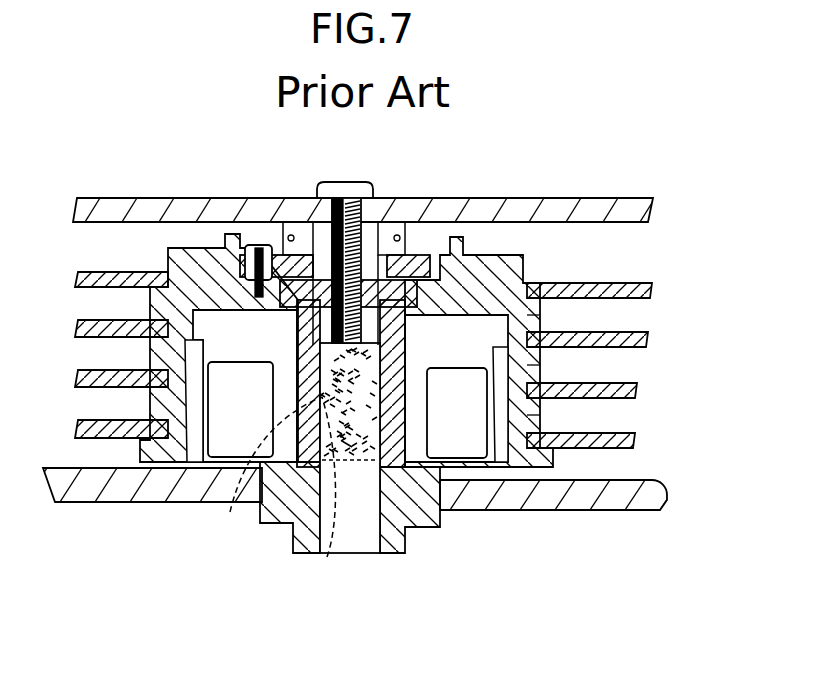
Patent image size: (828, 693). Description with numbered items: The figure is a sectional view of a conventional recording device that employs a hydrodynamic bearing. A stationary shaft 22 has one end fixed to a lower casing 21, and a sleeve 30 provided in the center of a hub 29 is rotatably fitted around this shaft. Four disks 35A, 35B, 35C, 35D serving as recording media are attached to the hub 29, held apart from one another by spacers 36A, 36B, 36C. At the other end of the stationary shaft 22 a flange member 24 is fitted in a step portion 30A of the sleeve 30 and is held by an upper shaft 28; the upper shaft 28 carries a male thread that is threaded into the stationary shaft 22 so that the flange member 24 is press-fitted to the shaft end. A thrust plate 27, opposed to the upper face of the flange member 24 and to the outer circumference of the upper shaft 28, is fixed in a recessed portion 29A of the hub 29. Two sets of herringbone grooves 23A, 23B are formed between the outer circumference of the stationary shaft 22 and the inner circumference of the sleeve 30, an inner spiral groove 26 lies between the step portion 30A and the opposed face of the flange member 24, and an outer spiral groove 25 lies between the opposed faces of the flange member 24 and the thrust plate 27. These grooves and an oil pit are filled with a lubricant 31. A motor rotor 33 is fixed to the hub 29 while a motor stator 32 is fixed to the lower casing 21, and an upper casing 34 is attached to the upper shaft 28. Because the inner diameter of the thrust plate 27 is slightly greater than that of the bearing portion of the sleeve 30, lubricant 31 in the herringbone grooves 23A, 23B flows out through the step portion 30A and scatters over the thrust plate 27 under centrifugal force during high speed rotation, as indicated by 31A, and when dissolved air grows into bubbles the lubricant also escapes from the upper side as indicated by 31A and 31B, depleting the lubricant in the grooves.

The lower casing 21 is at (260, 502).
The stationary shaft 22 is at (355, 540).
The herringbone groove 23A is at (240, 488).
The herringbone groove 23B is at (311, 502).
The flange member 24 is at (215, 262).
The outer spiral groove 25 is at (250, 246).
The inner spiral groove 26 is at (280, 320).
The thrust plate 27 is at (443, 258).
The upper shaft 28 is at (318, 222).
The hub 29 is at (187, 277).
The recessed portion 29A is at (488, 272).
The sleeve 30 is at (393, 478).
The step portion 30A is at (412, 312).
The lubricant 31 is at (417, 415).
The lubricant scattering 31A is at (293, 236).
The lubricant outflow 31B is at (398, 238).
The motor stator 32 is at (460, 450).
The motor rotor 33 is at (523, 507).
The upper casing 34 is at (563, 213).
The disk 35A is at (637, 285).
The disk 35B is at (648, 340).
The disk 35C is at (640, 390).
The disk 35D is at (635, 440).
The spacer 36A is at (545, 312).
The spacer 36B is at (545, 362).
The spacer 36C is at (545, 410).